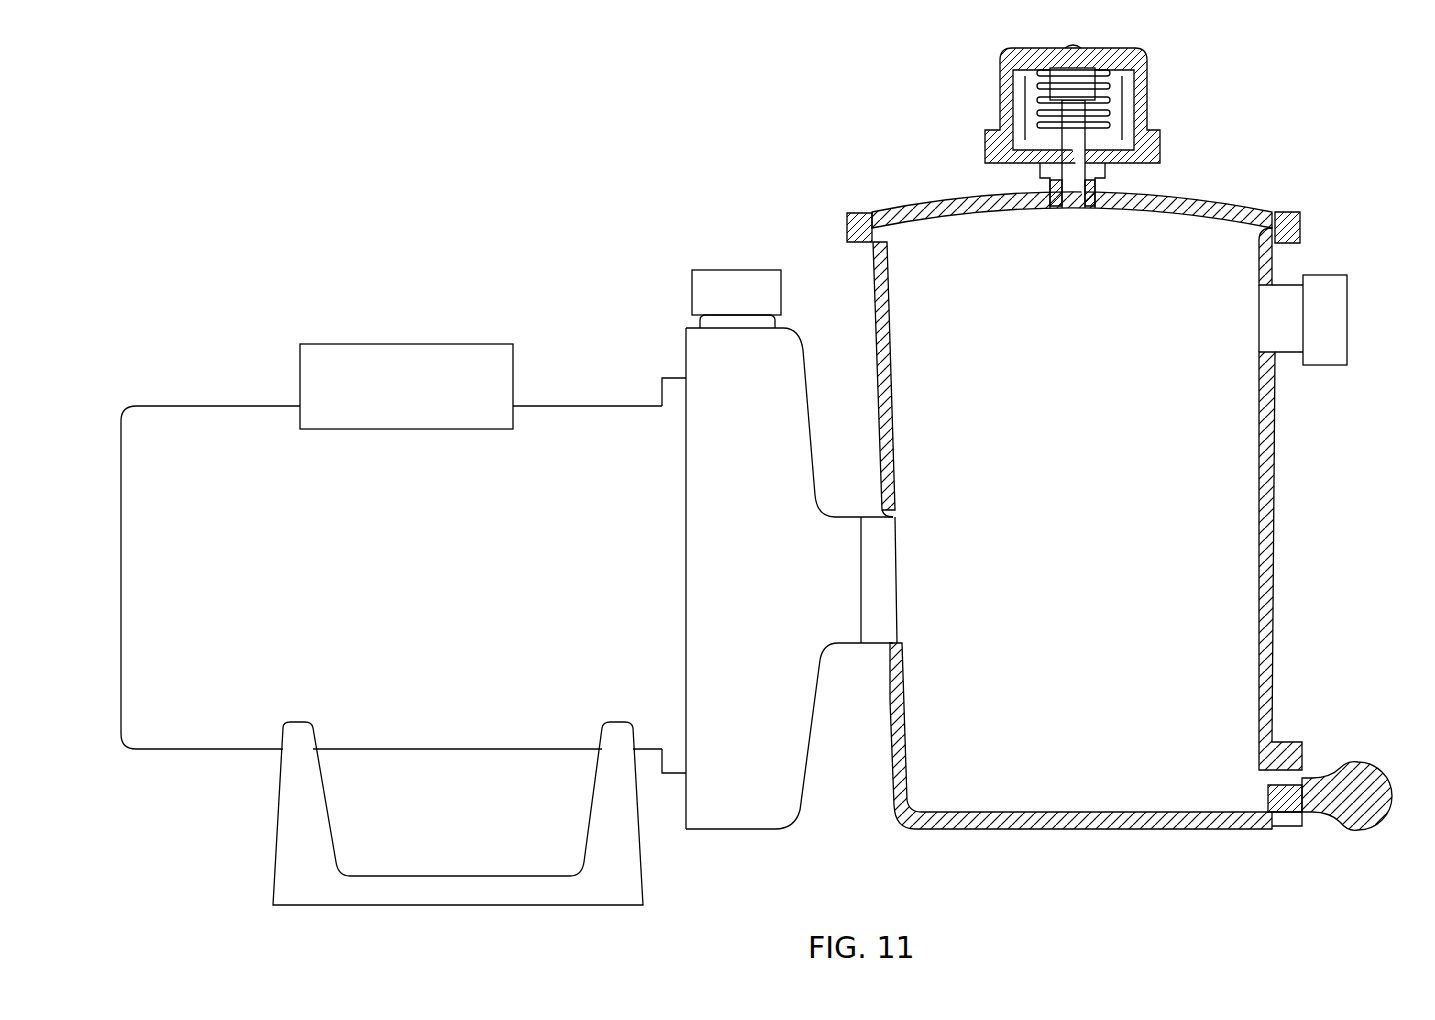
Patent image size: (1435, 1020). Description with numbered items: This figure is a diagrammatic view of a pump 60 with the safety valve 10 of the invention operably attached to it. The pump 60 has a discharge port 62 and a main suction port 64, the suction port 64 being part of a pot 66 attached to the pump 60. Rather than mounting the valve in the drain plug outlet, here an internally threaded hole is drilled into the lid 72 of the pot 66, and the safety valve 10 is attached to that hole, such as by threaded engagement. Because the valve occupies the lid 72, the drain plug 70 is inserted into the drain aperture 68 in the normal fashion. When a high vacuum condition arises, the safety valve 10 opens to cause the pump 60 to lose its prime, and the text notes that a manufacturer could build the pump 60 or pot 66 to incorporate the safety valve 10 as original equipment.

The safety valve 10 is at (1160, 105).
The pump 60 is at (225, 340).
The discharge port 62 is at (740, 285).
The main suction port 64 is at (1340, 330).
The pot 66 is at (1268, 541).
The threaded aperture 68 is at (1268, 800).
The drain plug 70 is at (1352, 827).
The lid 72 is at (940, 203).